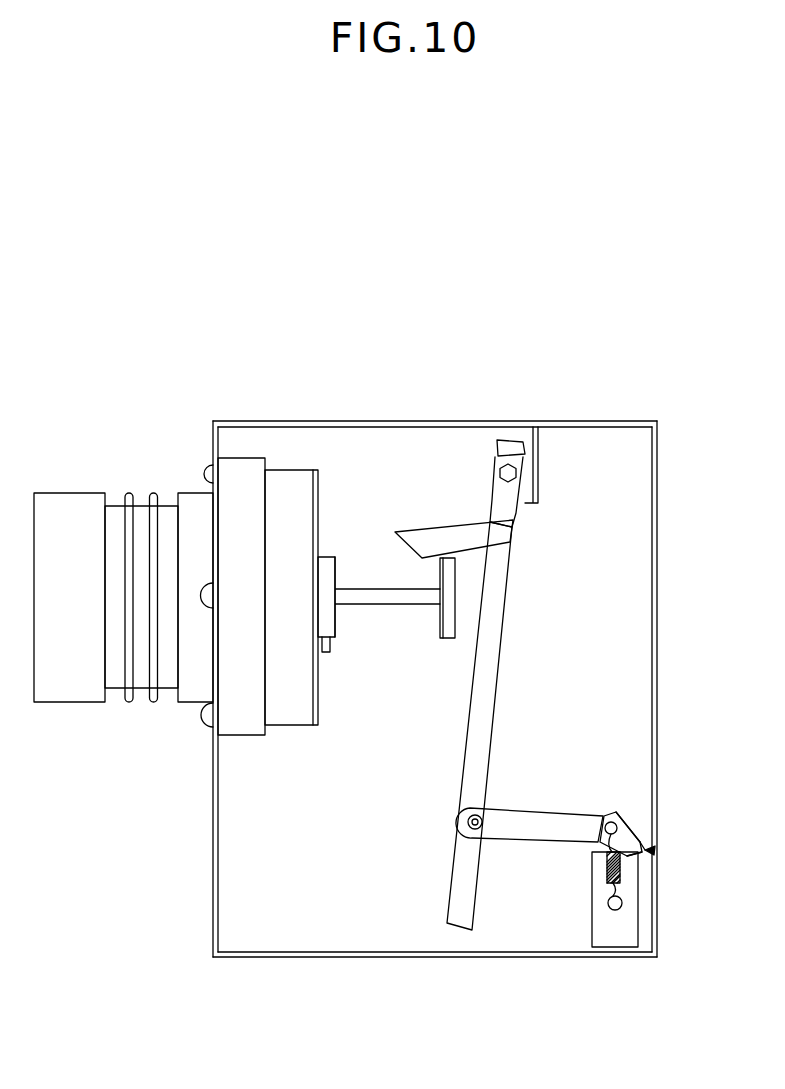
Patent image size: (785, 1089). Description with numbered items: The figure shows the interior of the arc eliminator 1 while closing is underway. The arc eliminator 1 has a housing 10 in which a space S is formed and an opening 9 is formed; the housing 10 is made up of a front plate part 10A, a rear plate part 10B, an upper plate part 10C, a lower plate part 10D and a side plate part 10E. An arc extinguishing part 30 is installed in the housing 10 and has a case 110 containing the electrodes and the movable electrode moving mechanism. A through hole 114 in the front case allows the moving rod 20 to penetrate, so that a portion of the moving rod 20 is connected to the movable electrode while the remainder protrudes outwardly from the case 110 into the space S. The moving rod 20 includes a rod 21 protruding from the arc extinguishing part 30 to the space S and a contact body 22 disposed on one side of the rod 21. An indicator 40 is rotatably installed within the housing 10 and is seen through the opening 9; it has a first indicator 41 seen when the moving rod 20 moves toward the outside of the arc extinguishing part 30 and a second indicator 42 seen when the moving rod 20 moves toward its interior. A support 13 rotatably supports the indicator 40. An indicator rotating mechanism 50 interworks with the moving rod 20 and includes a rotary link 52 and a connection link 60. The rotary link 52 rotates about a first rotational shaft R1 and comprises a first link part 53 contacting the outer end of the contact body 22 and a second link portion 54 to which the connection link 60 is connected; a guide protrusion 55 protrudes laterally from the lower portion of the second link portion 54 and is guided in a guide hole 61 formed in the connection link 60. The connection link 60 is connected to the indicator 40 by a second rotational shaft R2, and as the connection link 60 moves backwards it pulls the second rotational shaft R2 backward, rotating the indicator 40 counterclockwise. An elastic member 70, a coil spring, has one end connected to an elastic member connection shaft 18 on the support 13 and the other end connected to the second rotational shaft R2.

The arc eliminator 1 is at (160, 300).
The housing 10 is at (622, 415).
The front plate part 10A is at (657, 543).
The rear plate part 10B is at (213, 795).
The upper plate part 10C is at (560, 421).
The lower plate part 10D is at (258, 958).
The side plate part 10E is at (253, 885).
The space S is at (613, 670).
The case 110 is at (243, 460).
The arc extinguishing part 30 is at (290, 455).
The through hole 114 is at (336, 590).
The moving rod 20 is at (348, 1018).
The rod 21 is at (362, 598).
The contact body 22 is at (447, 640).
The indicator rotating mechanism 50 is at (545, 525).
The rotary link 52 is at (440, 366).
The first link part 53 is at (445, 532).
The second link portion 54 is at (487, 505).
The first rotational shaft R1 is at (508, 464).
The connection link 60 is at (540, 830).
The guide protrusion 55 is at (468, 838).
The guide hole 61 is at (484, 838).
The second rotational shaft R2 is at (612, 826).
The indicator 40 is at (642, 840).
The first indicator 41 is at (617, 813).
The second indicator 42 is at (640, 858).
The opening 9 is at (650, 851).
The support 13 is at (640, 936).
The elastic member 70 is at (610, 886).
The elastic member connection shaft 18 is at (615, 912).